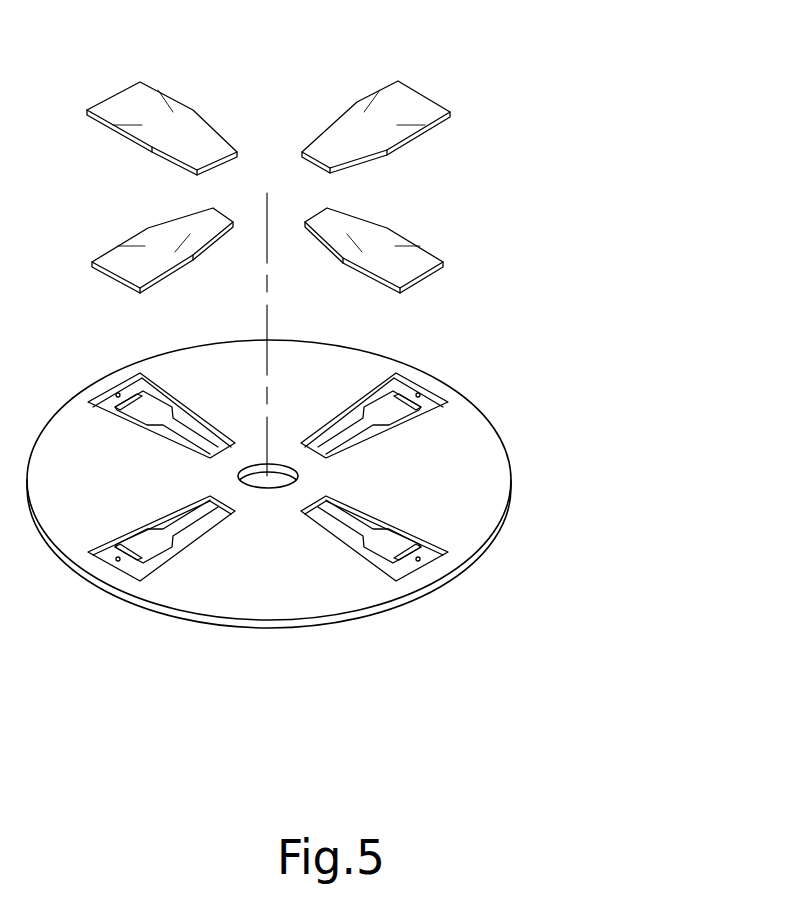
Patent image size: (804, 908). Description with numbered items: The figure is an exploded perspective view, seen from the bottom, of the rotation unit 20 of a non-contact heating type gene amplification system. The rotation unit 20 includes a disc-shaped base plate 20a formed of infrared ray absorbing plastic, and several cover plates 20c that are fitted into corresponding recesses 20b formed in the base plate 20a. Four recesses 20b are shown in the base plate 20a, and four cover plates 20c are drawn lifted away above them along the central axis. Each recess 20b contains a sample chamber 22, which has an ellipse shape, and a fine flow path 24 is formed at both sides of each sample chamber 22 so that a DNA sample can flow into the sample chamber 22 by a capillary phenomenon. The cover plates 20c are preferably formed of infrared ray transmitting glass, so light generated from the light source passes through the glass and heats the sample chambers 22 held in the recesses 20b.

The rotation unit 20 is at (293, 738).
The base plate 20a is at (498, 460).
The recess 20b is at (347, 538).
The cover plate 20c is at (418, 100).
The sample chamber 22 is at (418, 561).
The fine flow path 24 is at (378, 568).